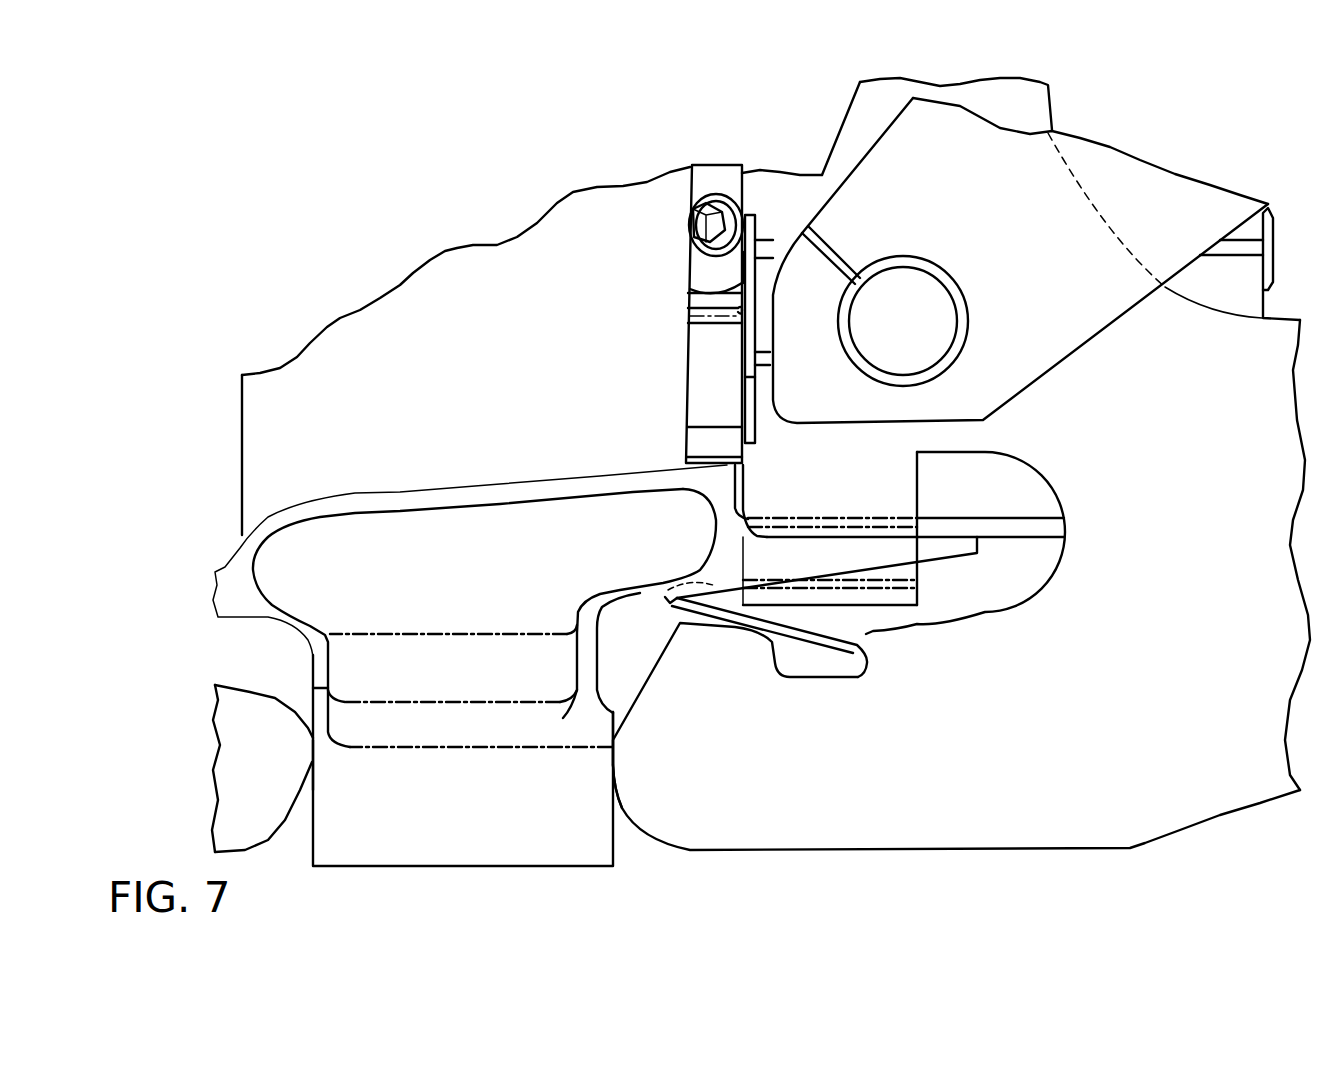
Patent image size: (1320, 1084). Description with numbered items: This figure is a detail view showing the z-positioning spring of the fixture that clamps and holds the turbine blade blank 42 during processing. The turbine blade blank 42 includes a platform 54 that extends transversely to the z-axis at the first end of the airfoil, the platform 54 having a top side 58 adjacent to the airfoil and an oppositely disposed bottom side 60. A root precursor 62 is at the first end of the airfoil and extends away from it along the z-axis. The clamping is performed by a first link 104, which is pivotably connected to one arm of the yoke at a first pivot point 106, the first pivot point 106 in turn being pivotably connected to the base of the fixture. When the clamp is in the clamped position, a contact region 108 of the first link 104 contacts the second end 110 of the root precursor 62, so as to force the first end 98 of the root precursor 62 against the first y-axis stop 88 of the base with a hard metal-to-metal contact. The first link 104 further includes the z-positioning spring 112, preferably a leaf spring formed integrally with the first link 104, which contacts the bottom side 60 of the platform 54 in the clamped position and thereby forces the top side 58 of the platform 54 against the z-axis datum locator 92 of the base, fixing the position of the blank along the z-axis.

The turbine blade blank 42 is at (345, 343).
The platform 54 is at (470, 494).
The top side 58 is at (683, 463).
The bottom side 60 is at (890, 567).
The root precursor 62 is at (492, 847).
The first y-axis stop 88 is at (325, 767).
The z-axis datum locator 92 is at (710, 457).
The first end of the root precursor 98 is at (313, 797).
The first link 104 is at (1133, 817).
The first pivot point 106 is at (933, 310).
The contact region 108 is at (612, 762).
The second end of the root precursor 110 is at (613, 796).
The z-positioning spring 112 is at (732, 597).